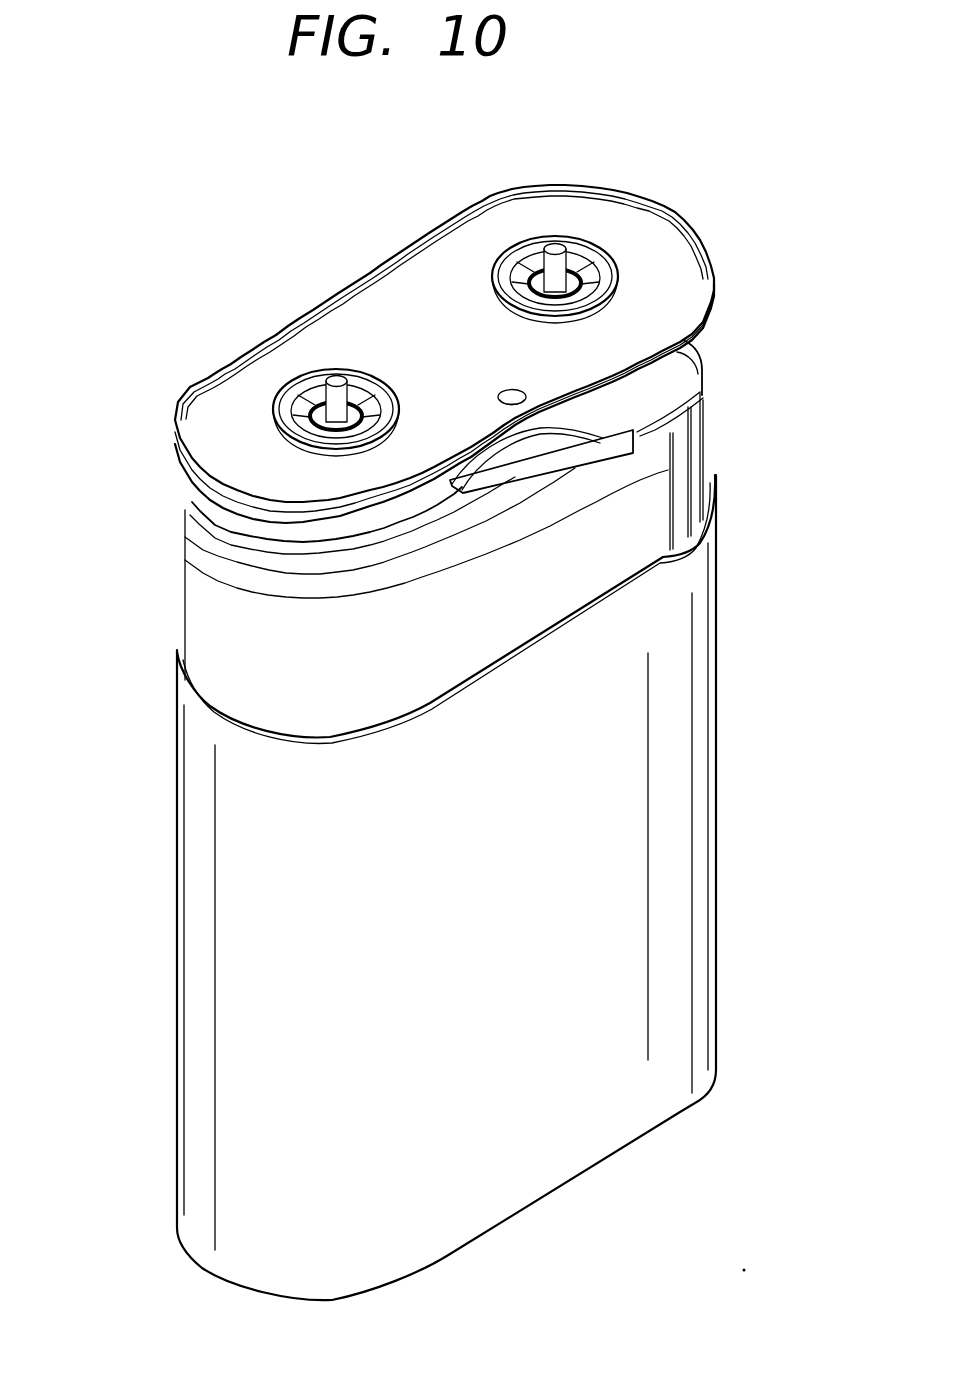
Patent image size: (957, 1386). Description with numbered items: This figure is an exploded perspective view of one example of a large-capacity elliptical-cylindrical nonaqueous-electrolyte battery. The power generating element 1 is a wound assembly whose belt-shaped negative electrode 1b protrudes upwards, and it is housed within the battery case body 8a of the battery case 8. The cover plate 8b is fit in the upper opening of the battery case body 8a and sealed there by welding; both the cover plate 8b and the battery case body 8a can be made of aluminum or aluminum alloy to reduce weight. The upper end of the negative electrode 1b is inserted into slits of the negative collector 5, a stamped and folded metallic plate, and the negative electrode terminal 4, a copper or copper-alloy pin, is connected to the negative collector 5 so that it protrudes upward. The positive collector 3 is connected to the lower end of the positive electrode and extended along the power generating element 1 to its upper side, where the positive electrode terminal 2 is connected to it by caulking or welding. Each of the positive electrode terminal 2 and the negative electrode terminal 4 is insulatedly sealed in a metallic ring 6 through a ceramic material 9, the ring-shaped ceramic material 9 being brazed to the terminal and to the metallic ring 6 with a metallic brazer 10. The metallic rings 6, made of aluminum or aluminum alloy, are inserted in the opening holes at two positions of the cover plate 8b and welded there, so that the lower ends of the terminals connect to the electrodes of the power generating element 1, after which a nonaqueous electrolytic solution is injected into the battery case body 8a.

The power generating element 1 is at (713, 424).
The negative electrode 1b is at (517, 488).
The positive electrode terminal 2 is at (553, 250).
The positive collector 3 is at (327, 523).
The negative electrode terminal 4 is at (338, 377).
The negative collector 5 is at (680, 357).
The metallic ring 6 is at (378, 413).
The battery case 8 is at (164, 491).
The battery case body 8a is at (202, 878).
The cover plate 8b is at (402, 290).
The ceramic material 9 is at (283, 404).
The sealing material 10 is at (367, 407).